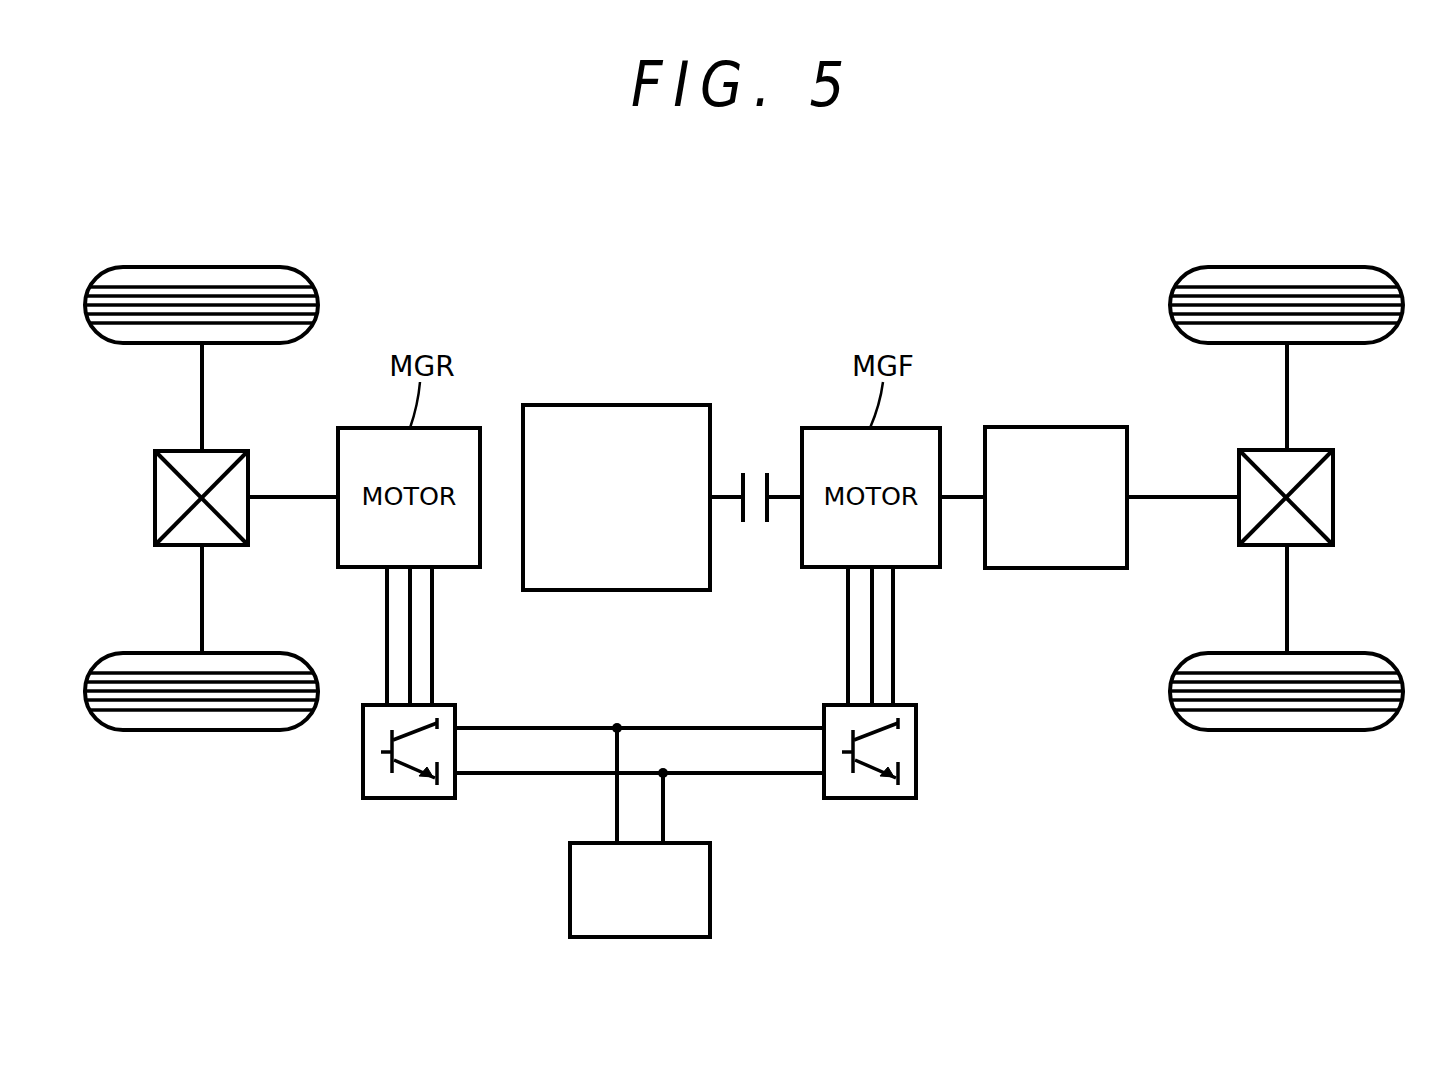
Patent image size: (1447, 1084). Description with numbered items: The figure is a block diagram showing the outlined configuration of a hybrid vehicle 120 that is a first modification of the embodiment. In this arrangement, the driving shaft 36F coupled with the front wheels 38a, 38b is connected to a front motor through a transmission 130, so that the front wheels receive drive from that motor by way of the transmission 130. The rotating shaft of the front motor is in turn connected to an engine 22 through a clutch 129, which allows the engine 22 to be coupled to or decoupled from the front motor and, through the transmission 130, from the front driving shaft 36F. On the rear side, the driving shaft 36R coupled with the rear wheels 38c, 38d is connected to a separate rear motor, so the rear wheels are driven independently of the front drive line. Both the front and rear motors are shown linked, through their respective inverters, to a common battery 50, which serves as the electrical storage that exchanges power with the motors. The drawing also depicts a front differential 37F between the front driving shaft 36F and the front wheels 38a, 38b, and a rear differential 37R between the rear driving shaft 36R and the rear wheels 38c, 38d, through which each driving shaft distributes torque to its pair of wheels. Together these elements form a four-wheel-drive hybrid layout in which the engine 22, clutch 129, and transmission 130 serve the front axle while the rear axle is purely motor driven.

The engine 22 is at (617, 405).
The driving shaft 36R is at (285, 495).
The driving shaft 36F is at (1172, 495).
The rear differential gear 37R is at (170, 451).
The front differential gear 37F is at (1333, 473).
The front wheel 38a is at (1287, 267).
The front wheel 38b is at (1287, 730).
The rear wheel 38c is at (203, 267).
The rear wheel 38d is at (203, 730).
The battery 50 is at (710, 888).
The hybrid vehicle 120 is at (1067, 238).
The clutch 129 is at (755, 473).
The transmission 130 is at (1055, 427).